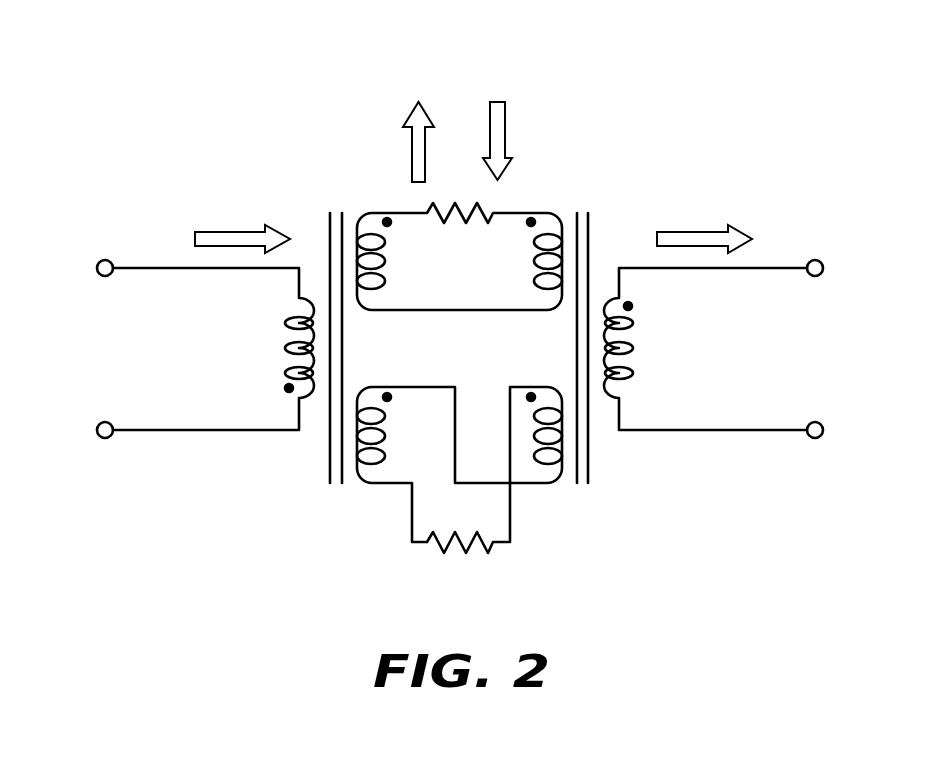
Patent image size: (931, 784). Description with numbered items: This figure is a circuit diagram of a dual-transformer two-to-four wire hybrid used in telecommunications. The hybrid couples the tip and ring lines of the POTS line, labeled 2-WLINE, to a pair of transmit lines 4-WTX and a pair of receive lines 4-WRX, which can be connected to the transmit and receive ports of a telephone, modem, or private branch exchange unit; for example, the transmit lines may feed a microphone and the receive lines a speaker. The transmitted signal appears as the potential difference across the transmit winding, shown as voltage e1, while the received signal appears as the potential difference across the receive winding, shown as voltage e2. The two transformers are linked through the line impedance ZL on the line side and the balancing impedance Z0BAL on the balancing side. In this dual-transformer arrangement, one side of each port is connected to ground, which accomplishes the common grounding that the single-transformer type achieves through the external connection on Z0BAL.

The transmit-side input voltage across primary winding e1 is at (236, 268).
The receive-side output voltage across secondary winding e2 is at (775, 268).
The line impedance ZL is at (459, 256).
The balancing impedance Z0BAL is at (459, 502).
The two-wire line 2-WLINE is at (457, 110).
The four-wire transmit lines 4-WTX is at (228, 215).
The four-wire receive lines 4-WRX is at (689, 215).